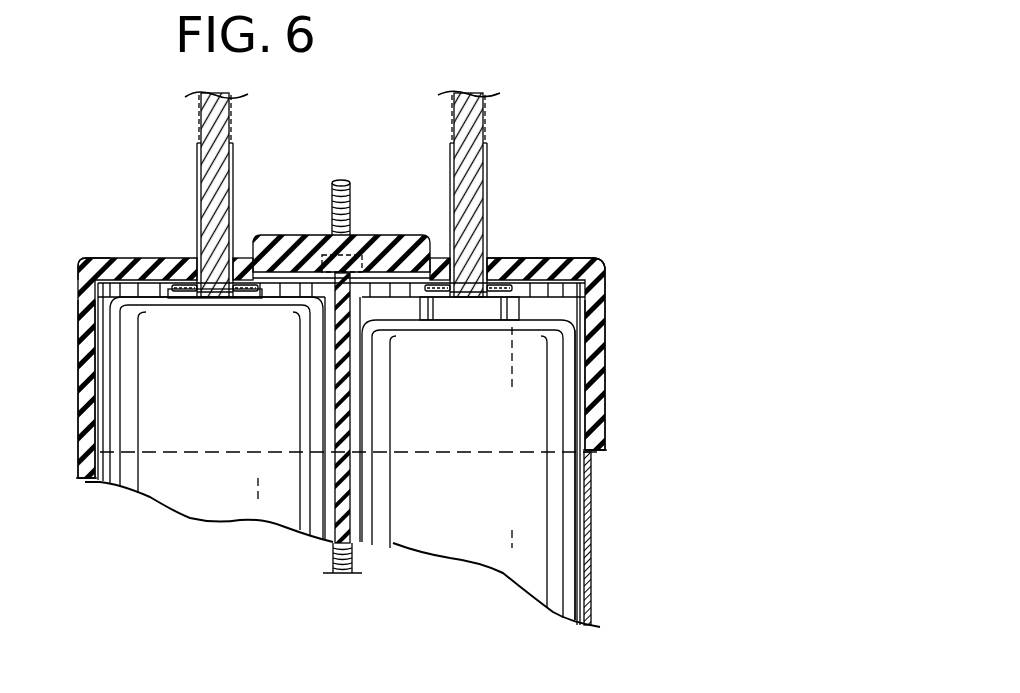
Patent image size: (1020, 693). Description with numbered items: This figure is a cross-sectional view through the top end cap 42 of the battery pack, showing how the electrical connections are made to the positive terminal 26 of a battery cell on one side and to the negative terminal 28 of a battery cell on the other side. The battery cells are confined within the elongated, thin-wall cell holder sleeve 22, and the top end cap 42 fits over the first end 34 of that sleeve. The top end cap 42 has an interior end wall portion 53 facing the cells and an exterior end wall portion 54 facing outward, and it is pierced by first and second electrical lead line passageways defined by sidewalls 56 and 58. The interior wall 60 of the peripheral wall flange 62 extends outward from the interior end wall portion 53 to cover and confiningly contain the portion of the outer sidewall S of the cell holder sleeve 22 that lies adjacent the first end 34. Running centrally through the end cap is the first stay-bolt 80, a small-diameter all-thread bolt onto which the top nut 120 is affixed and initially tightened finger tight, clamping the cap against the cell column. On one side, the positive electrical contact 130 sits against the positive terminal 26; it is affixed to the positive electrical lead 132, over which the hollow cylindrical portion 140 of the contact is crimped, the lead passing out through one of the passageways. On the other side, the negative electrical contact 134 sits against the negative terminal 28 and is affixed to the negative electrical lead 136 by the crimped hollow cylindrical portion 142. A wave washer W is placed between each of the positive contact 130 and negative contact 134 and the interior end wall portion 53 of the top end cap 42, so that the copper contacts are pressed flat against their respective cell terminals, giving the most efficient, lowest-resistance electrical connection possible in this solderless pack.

The cell holder sleeve 22 is at (592, 518).
The positive terminal 26 is at (478, 310).
The negative terminal 28 is at (268, 297).
The first end 34 is at (600, 268).
The top end cap 42 is at (600, 298).
The interior end wall portion 53 is at (122, 258).
The exterior end wall portion 54 is at (168, 258).
The sidewall of first electrical lead line passageway 56 is at (502, 258).
The sidewall of second electrical lead line passageway 58 is at (250, 258).
The interior wall 60 is at (84, 372).
The peripheral wall flange 62 is at (84, 452).
The first stay-bolt 80 is at (352, 195).
The top nut 120 is at (378, 250).
The positive electrical contact 130 is at (438, 303).
The positive electrical lead 132 is at (205, 299).
The negative electrical contact 134 is at (468, 118).
The negative electrical lead 136 is at (201, 108).
The hollow cylindrical portion of positive contact 140 is at (490, 168).
The hollow cylindrical portion of negative contact 142 is at (236, 154).
The outer sidewall S is at (586, 425).
The wave washer W is at (186, 298).